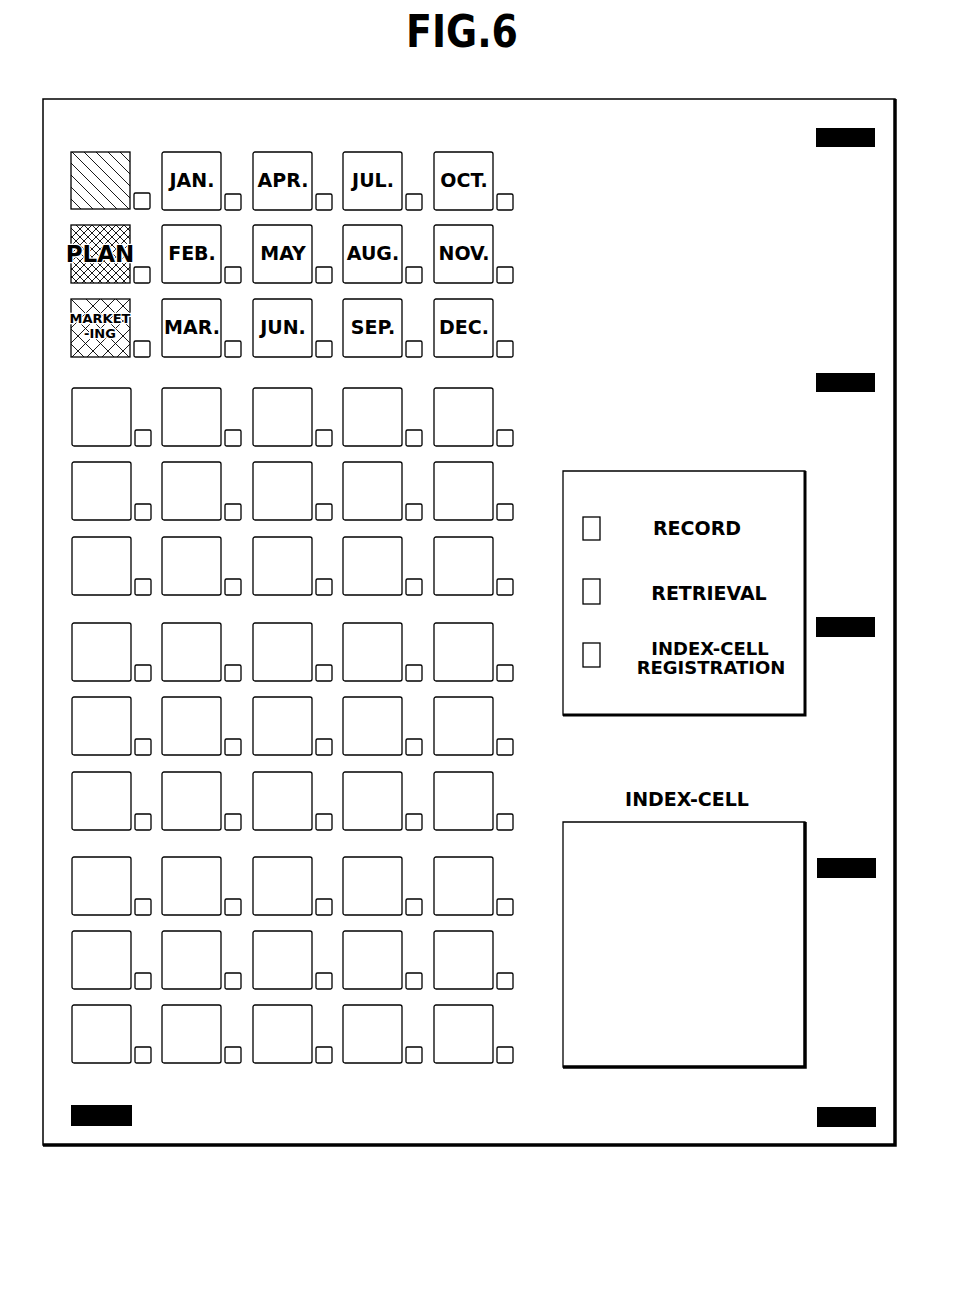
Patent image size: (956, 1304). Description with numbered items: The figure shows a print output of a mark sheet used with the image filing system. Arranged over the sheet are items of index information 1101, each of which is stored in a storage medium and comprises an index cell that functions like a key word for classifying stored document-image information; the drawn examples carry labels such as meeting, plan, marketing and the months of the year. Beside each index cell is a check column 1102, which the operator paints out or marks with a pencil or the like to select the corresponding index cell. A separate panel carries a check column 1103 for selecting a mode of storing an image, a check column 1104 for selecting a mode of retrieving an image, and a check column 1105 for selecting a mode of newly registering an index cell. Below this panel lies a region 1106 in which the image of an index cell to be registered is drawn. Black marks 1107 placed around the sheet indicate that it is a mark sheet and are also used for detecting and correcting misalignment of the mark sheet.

The index information 1101 is at (93, 152).
The check column 1102 is at (146, 192).
The check column for selecting a mode of storing an image 1103 is at (600, 519).
The check column for selecting a mode of retrieving an image 1104 is at (587, 579).
The check column for selecting a mode of newly registering an index cell 1105 is at (590, 667).
The region for drawing the image of an index cell to be registered 1106 is at (783, 822).
The marks indicating a mark sheet 1107 is at (848, 150).